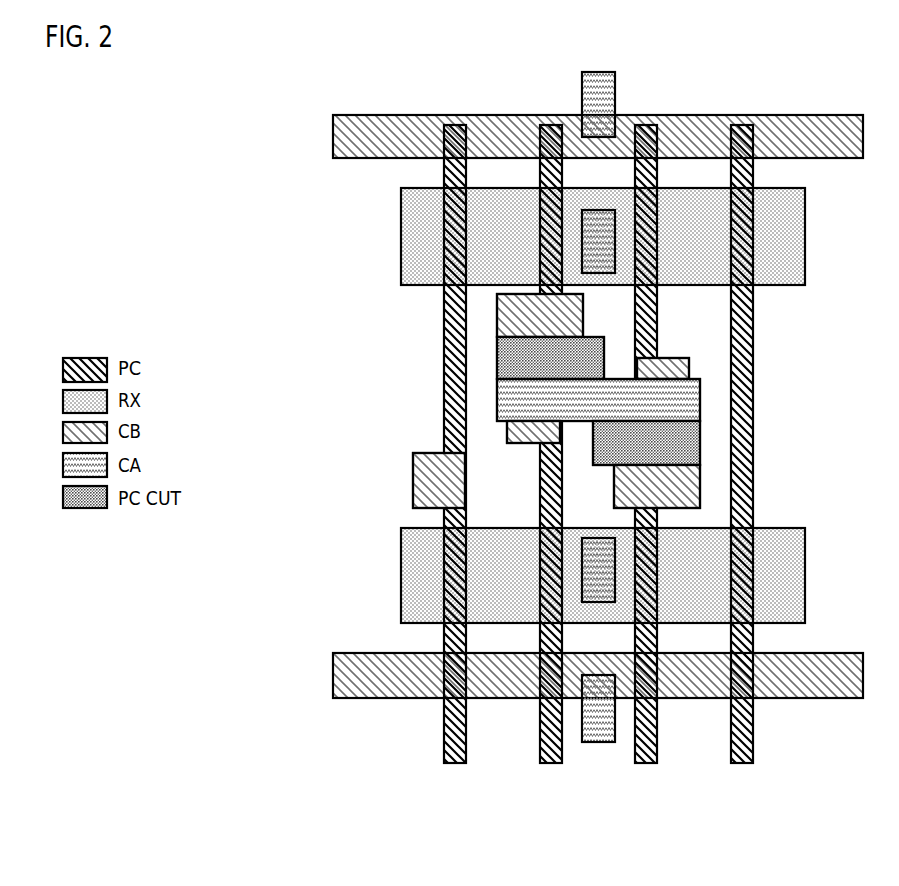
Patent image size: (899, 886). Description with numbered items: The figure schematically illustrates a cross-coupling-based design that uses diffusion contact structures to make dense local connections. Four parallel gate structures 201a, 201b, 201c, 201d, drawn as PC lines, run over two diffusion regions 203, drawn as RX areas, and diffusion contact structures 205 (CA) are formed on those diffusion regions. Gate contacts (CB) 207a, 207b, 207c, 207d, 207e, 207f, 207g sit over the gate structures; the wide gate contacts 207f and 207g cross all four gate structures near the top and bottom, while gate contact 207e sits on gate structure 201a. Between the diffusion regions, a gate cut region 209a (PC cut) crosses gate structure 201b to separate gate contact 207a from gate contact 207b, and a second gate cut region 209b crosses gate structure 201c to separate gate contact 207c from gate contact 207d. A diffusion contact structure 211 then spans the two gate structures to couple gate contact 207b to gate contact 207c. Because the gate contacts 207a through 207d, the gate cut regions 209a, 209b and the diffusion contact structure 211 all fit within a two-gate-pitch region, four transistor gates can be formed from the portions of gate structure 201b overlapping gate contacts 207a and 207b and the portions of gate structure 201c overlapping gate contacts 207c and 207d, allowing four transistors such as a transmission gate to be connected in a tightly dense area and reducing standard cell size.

The gate structure 201a is at (455, 764).
The gate structure 201b is at (551, 764).
The gate structure 201c is at (646, 764).
The gate structure 201d is at (742, 764).
The diffusion region 203 is at (400, 237).
The diffusion contact structure 205 is at (599, 71).
The gate contact 207a is at (496, 315).
The gate contact 207b is at (506, 433).
The gate contact 207c is at (690, 368).
The gate contact 207d is at (701, 485).
The gate contact 207e is at (412, 482).
The gate contact 207f is at (326, 114).
The gate contact 207g is at (327, 652).
The gate cut region 209a is at (496, 358).
The gate cut region 209b is at (701, 443).
The diffusion contact structure 211 is at (611, 413).